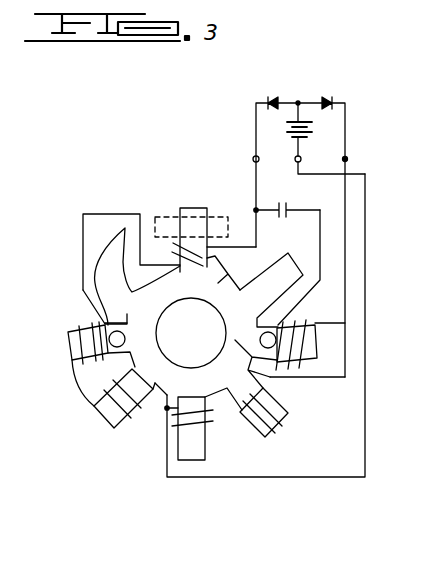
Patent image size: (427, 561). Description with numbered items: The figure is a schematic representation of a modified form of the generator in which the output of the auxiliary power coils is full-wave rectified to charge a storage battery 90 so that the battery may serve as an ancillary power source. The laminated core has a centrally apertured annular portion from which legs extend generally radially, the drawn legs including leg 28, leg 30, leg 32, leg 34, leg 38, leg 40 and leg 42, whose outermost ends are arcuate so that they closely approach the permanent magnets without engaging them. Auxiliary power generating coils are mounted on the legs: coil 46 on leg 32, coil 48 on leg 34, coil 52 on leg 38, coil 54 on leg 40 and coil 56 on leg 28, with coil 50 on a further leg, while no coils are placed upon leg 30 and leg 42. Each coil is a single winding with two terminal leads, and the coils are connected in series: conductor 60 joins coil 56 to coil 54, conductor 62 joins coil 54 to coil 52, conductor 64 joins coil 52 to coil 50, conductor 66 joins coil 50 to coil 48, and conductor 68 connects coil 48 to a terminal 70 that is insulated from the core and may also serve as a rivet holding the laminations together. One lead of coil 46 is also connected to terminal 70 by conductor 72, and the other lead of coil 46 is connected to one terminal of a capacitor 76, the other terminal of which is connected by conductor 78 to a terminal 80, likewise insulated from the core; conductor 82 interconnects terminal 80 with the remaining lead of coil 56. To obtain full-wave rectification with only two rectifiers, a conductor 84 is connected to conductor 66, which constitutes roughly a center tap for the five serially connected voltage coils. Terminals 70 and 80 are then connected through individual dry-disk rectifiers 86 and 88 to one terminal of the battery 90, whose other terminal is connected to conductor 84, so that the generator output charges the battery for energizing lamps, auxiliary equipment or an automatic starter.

The leg 28 is at (190, 208).
The leg 30 is at (270, 266).
The leg 32 is at (318, 343).
The leg 34 is at (286, 428).
The leg 38 is at (100, 424).
The leg 40 is at (68, 338).
The leg 42 is at (107, 241).
The coil 46 is at (304, 322).
The coil 48 is at (292, 401).
The coil 50 is at (172, 440).
The coil 52 is at (130, 428).
The coil 54 is at (82, 322).
The coil 56 is at (223, 271).
The conductor 60 is at (122, 212).
The conductor 62 is at (83, 384).
The conductor 64 is at (165, 404).
The conductor 66 is at (250, 437).
The conductor 68 is at (306, 380).
The terminal 70 is at (348, 158).
The conductor 72 is at (331, 323).
The capacitor 76 is at (292, 207).
The conductor 78 is at (279, 205).
The terminal 80 is at (252, 158).
The conductor 82 is at (229, 250).
The conductor 84 is at (366, 252).
The dry-disk rectifier 86 is at (328, 99).
The dry-disk rectifier 88 is at (272, 99).
The battery 90 is at (300, 128).